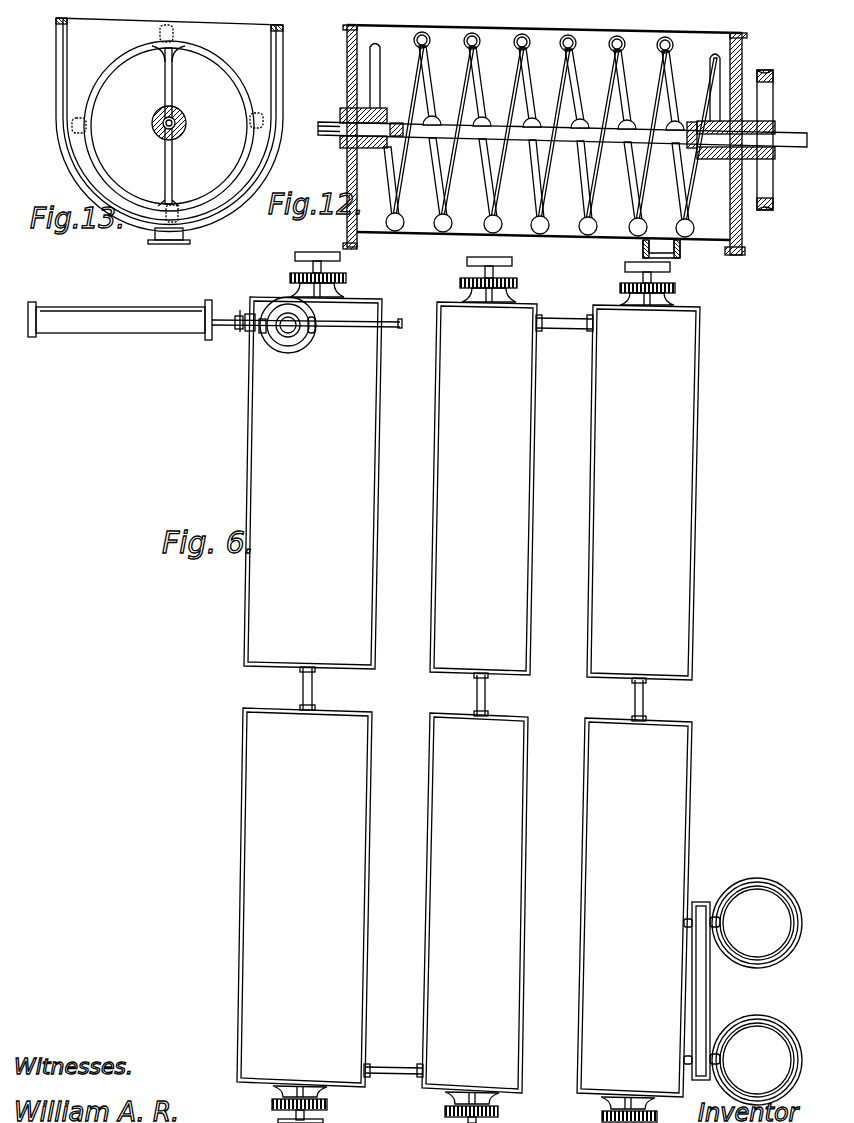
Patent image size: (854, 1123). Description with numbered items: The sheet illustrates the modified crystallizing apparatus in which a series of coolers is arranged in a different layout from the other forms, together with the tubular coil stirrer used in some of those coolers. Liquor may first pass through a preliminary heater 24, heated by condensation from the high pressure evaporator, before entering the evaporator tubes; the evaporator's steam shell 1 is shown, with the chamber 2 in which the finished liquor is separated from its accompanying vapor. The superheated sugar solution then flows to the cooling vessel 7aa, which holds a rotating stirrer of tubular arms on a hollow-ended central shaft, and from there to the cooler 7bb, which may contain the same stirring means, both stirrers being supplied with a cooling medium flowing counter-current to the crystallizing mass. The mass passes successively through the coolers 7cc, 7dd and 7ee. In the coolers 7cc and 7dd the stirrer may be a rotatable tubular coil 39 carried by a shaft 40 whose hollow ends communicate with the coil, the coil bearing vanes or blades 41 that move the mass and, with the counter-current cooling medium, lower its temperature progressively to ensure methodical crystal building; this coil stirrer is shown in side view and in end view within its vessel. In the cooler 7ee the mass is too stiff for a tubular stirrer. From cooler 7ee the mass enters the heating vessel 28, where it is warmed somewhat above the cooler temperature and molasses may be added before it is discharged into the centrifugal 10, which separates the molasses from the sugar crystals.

In FIG. 6, the steam shell 1 is at (298, 333).
In FIG. 6, the chamber 2 is at (288, 353).
In FIG. 6, the cooling vessel 7aa is at (313, 460).
In FIG. 13, the cooler 7bb is at (257, 59).
In FIG. 12, the cooler 7bb is at (347, 60).
In FIG. 6, the cooler 7bb is at (304, 895).
In FIG. 6, the cooler 7cc is at (446, 898).
In FIG. 6, the cooler 7dd is at (483, 466).
In FIG. 6, the cooler 7ee is at (618, 471).
In FIG. 6, the centrifugal 10 is at (743, 991).
In FIG. 6, the preliminary heater 24 is at (125, 328).
In FIG. 6, the heating vessel 28 is at (634, 900).
In FIG. 13, the rotatable tubular coil 39 is at (99, 85).
In FIG. 12, the rotatable tubular coil 39 is at (520, 82).
In FIG. 13, the shaft 40 is at (157, 132).
In FIG. 12, the shaft 40 is at (418, 137).
In FIG. 13, the vanes or blades 41 is at (176, 30).
In FIG. 12, the vanes or blades 41 is at (462, 43).